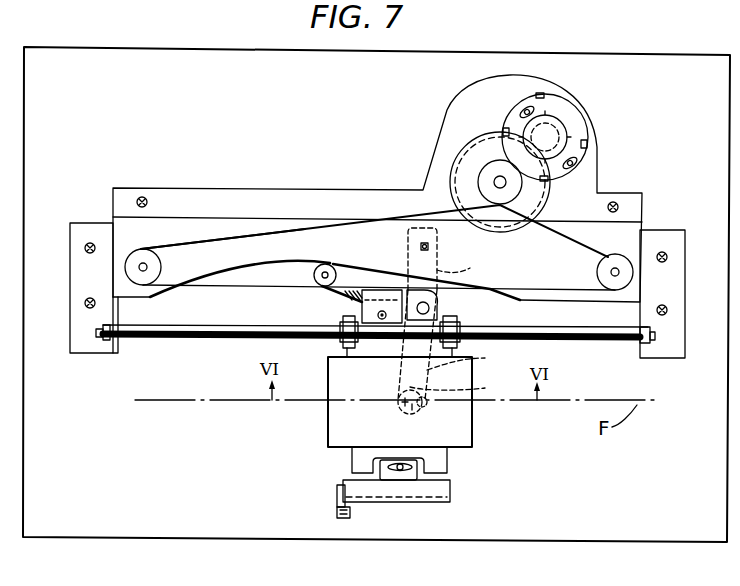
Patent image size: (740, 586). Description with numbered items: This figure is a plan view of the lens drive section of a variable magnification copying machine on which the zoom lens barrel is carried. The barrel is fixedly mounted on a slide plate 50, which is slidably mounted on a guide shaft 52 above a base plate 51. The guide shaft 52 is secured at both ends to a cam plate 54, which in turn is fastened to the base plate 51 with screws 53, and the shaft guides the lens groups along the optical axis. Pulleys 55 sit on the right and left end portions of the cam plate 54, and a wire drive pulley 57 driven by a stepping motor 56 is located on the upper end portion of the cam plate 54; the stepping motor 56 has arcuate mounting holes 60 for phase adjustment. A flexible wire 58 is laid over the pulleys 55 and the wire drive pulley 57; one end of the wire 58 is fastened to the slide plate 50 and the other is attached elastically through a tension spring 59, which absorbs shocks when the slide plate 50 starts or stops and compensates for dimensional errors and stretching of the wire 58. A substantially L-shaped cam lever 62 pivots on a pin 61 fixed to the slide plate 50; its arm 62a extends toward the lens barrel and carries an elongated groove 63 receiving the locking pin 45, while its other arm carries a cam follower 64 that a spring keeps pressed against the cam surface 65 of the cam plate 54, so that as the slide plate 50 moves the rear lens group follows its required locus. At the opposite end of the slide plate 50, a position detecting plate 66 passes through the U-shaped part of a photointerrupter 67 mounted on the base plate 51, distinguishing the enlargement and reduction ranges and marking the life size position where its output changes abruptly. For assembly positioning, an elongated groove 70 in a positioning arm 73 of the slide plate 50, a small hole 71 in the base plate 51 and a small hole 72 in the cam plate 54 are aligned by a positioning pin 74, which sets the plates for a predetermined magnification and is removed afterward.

The locking pin 45 is at (421, 416).
The slide plate 50 is at (367, 350).
The base plate 51 is at (582, 538).
The guide shaft 52 is at (155, 338).
The screws 53 is at (144, 197).
The cam plate 54 is at (201, 217).
The pulleys 55 is at (136, 252).
The stepping motor 56 is at (577, 122).
The wire drive pulley 57 is at (492, 167).
The flexible wire 58 is at (305, 227).
The tension spring 59 is at (342, 283).
The arcuate mounting holes 60 is at (530, 93).
The pin 61 is at (438, 307).
The cam lever 62 is at (360, 297).
The arm 62a is at (476, 360).
The elongated groove 63 is at (461, 385).
The cam follower 64 is at (323, 270).
The cam surface 65 is at (243, 266).
The position detecting plate 66 is at (425, 492).
The photointerrupter 67 is at (340, 493).
The elongated groove 70 is at (430, 232).
The small hole 71 is at (403, 345).
The small hole 72 is at (385, 273).
The positioning arm 73 is at (462, 270).
The positioning pin 74 is at (431, 345).